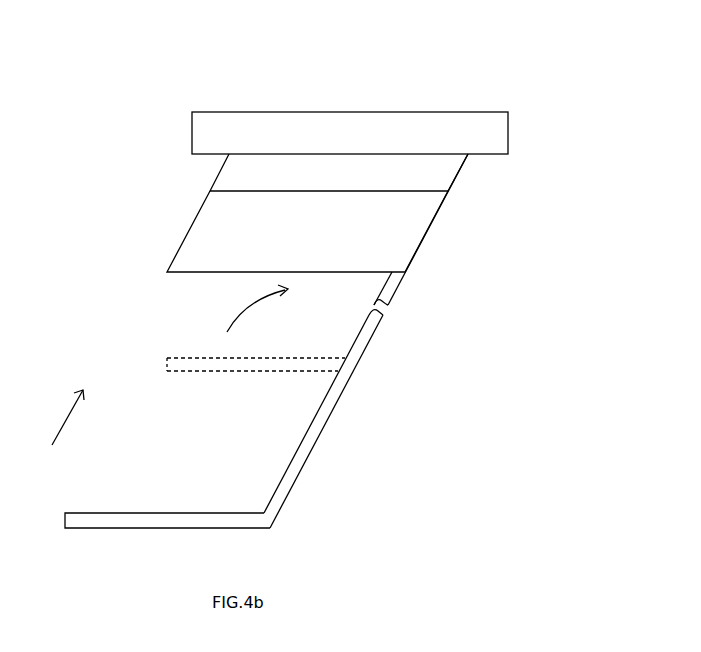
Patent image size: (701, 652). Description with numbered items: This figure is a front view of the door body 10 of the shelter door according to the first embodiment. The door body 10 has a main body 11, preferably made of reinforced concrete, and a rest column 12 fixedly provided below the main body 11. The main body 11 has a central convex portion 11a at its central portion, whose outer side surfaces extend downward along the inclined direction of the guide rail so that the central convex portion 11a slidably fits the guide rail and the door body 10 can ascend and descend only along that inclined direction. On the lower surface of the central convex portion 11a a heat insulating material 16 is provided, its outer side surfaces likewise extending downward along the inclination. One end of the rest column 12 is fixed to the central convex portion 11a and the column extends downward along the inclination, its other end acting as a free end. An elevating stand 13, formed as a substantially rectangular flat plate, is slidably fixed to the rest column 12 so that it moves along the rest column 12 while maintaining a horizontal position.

The door body 10 is at (497, 90).
The main body 11 is at (338, 125).
The central convex portion 11a is at (444, 175).
The heat insulating material 16 is at (425, 233).
The rest column 12 is at (328, 409).
The elevating stand 13 is at (172, 513).